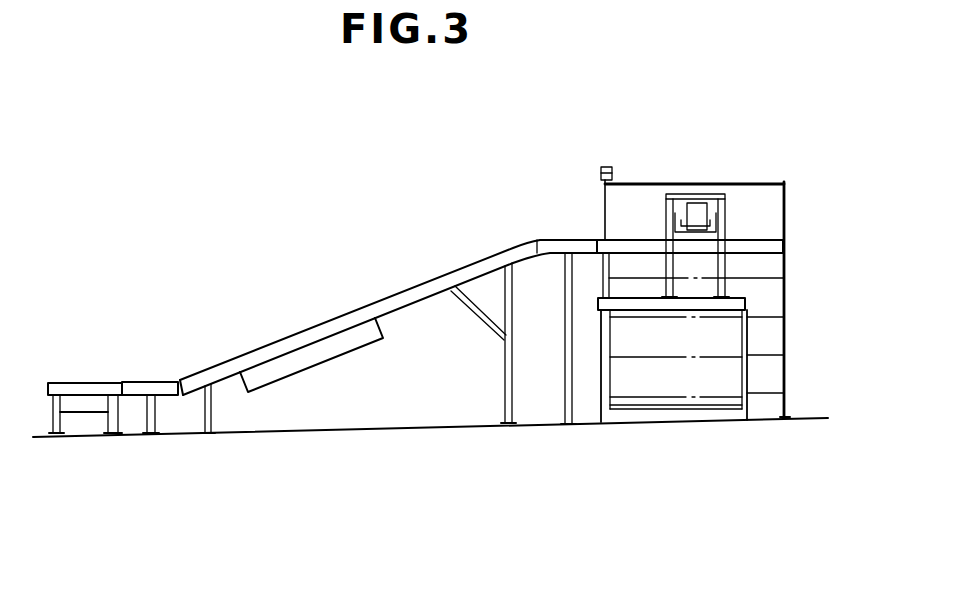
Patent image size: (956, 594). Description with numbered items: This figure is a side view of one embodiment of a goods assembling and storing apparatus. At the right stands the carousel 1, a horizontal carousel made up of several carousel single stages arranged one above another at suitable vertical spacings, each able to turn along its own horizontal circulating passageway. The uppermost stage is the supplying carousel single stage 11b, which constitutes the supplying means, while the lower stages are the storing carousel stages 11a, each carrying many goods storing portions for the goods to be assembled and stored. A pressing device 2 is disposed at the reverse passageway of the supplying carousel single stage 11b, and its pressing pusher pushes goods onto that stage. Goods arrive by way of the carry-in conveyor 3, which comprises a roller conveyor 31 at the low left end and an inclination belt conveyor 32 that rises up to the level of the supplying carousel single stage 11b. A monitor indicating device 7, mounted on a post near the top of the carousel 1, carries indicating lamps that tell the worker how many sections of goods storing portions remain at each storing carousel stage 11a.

The carousel 1 is at (743, 203).
The pressing device 2 is at (700, 210).
The carry-in conveyor 3 is at (315, 332).
The monitor indicating device 7 is at (601, 173).
The storing carousel stage 11a is at (768, 268).
The supplying carousel single stage 11b is at (762, 228).
The roller conveyor 31 is at (80, 386).
The inclination belt conveyor 32 is at (355, 318).